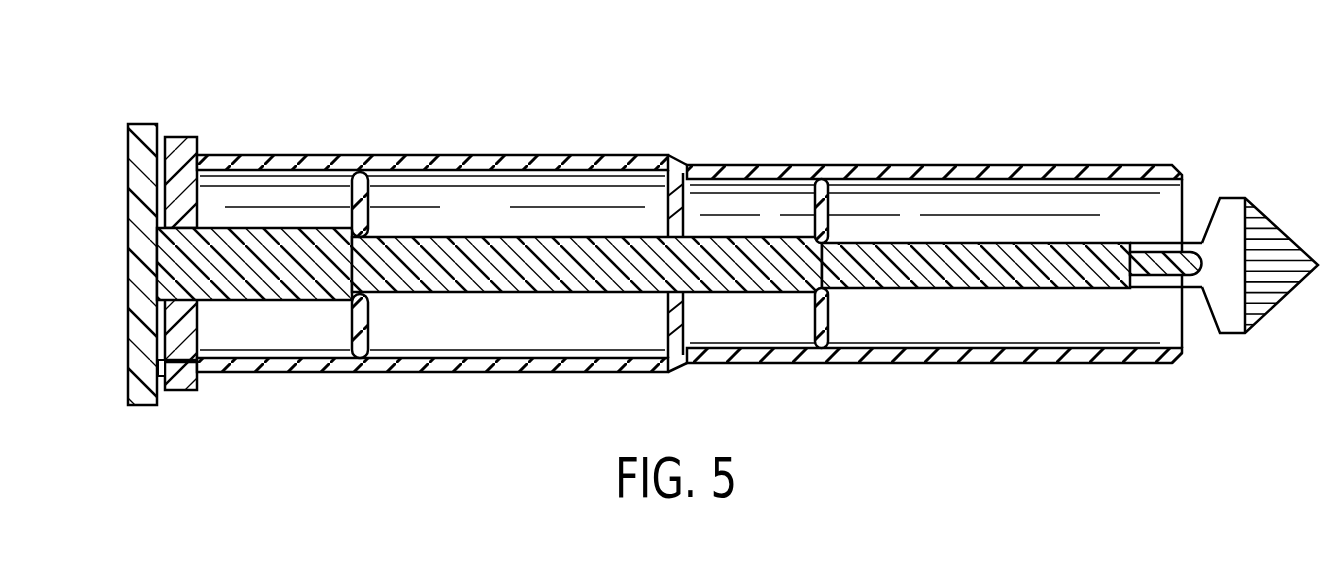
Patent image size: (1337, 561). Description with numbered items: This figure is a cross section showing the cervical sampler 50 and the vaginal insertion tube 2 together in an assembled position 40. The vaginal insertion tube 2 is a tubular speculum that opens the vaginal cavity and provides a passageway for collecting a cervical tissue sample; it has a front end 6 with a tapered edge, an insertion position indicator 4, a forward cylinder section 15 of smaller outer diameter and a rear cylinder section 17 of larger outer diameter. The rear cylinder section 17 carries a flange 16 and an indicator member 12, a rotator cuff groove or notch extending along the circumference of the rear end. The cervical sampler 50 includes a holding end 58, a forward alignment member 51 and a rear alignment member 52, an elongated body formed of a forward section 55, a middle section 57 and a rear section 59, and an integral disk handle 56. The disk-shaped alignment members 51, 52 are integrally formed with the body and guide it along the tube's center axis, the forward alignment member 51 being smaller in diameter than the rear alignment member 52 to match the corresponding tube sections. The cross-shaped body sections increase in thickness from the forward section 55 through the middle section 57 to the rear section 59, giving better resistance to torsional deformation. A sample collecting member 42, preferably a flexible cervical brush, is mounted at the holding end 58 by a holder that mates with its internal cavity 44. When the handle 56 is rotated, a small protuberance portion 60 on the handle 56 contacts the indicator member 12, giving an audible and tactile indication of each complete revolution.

The vaginal insertion tube 2 is at (540, 152).
The insertion position indicator 4 is at (676, 364).
The front end 6 is at (1187, 368).
The indicator member 12 is at (183, 367).
The forward cylinder section 15 is at (923, 165).
The flange 16 is at (177, 137).
The rear cylinder section 17 is at (327, 155).
The assembled position 40 is at (676, 95).
The sample collecting member 42 is at (1283, 302).
The internal cavity 44 is at (1190, 243).
The cervical sampler 50 is at (743, 232).
The forward alignment member 51 is at (813, 325).
The rear alignment member 52 is at (367, 328).
The forward section 55 is at (973, 288).
The disk handle 56 is at (128, 335).
The middle section 57 is at (560, 292).
The holding end 58 is at (1132, 288).
The rear section 59 is at (293, 298).
The protuberance portion 60 is at (162, 373).